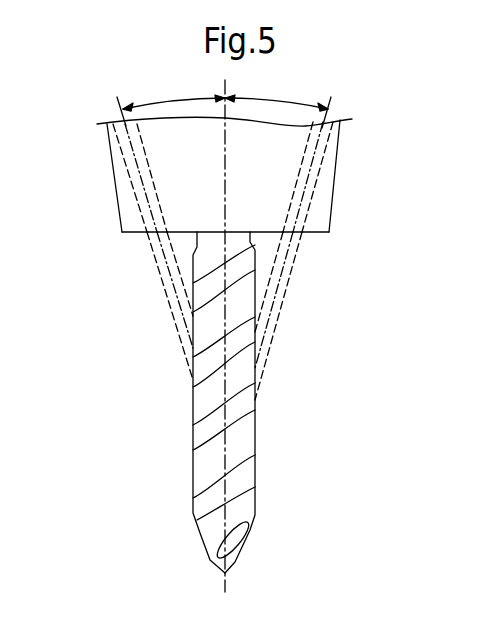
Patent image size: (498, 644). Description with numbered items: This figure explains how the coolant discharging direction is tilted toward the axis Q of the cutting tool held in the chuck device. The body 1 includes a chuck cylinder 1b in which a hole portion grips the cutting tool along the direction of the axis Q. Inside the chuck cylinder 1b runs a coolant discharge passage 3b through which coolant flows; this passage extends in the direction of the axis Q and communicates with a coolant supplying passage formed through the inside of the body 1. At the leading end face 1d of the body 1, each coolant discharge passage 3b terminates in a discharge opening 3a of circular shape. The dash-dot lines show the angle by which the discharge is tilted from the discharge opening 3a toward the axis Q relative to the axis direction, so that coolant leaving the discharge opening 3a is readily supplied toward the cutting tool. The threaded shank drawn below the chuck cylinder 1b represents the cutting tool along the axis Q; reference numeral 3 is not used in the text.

The body 1 is at (277, 174).
The chuck cylinder 1b is at (329, 191).
The leading end face 1d is at (318, 233).
The threaded shank 3 is at (224, 402).
The discharge opening 3a is at (148, 242).
The coolant discharge passage 3b is at (133, 182).
The axis Q is at (226, 354).